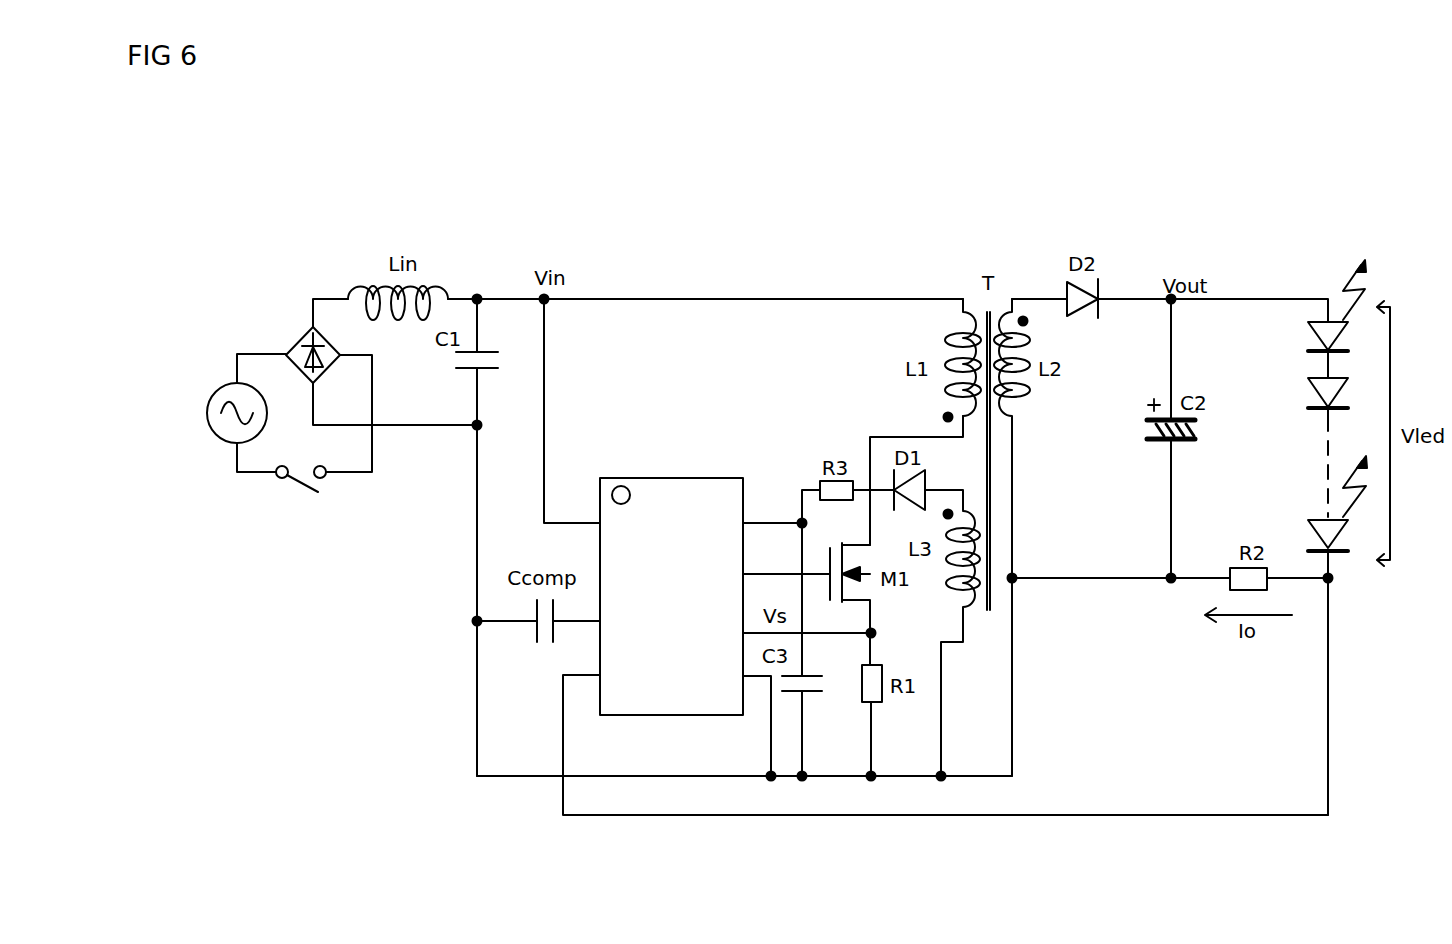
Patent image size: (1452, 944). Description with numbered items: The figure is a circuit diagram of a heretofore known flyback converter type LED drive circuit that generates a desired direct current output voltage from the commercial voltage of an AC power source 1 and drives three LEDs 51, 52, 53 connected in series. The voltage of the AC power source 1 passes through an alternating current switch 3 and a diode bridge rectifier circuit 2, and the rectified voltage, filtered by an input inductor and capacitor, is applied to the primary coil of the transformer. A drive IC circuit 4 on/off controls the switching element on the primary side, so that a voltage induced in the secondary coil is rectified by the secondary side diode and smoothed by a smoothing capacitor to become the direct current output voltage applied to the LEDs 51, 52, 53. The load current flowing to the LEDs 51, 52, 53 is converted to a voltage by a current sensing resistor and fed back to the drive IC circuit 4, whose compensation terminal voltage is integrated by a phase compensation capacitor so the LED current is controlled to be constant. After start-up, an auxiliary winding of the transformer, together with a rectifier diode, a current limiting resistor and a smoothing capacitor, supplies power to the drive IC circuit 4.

The AC power source 1 is at (204, 413).
The diode bridge rectifier circuit 2 is at (287, 351).
The alternating current switch 3 is at (303, 488).
The drive IC circuit 4 is at (676, 478).
The LED 51 is at (1310, 328).
The LED 52 is at (1310, 384).
The LED 53 is at (1310, 521).